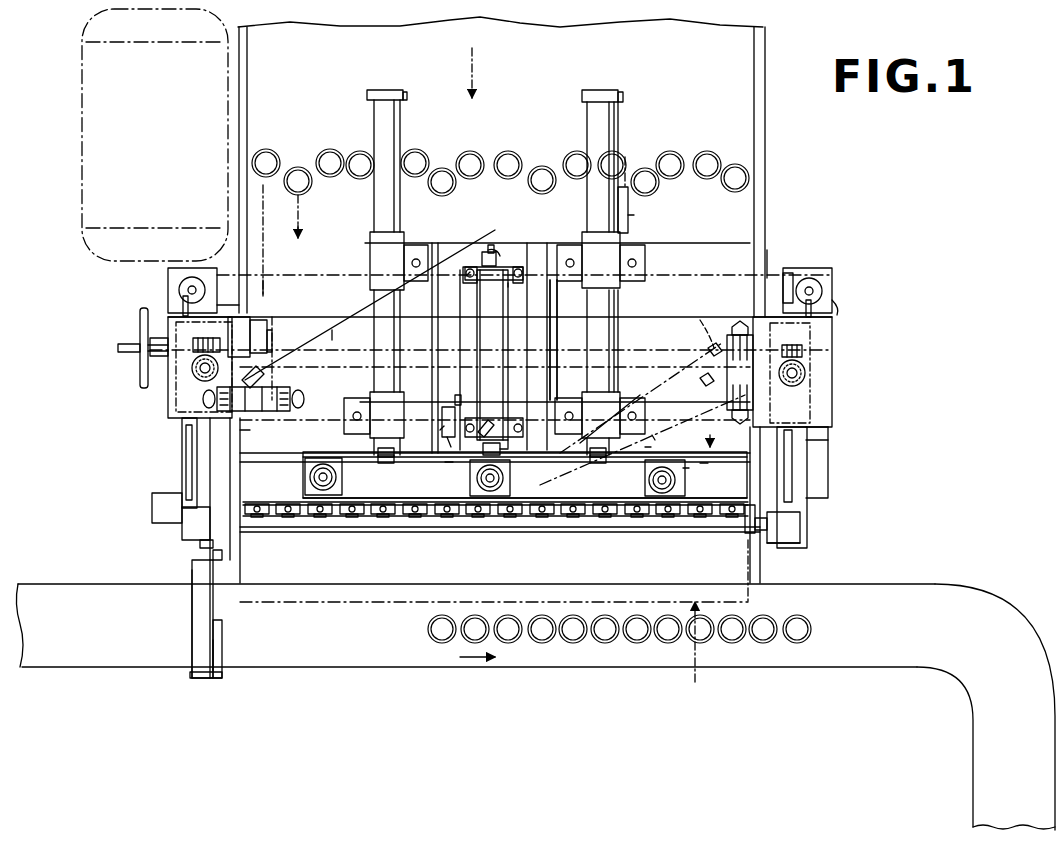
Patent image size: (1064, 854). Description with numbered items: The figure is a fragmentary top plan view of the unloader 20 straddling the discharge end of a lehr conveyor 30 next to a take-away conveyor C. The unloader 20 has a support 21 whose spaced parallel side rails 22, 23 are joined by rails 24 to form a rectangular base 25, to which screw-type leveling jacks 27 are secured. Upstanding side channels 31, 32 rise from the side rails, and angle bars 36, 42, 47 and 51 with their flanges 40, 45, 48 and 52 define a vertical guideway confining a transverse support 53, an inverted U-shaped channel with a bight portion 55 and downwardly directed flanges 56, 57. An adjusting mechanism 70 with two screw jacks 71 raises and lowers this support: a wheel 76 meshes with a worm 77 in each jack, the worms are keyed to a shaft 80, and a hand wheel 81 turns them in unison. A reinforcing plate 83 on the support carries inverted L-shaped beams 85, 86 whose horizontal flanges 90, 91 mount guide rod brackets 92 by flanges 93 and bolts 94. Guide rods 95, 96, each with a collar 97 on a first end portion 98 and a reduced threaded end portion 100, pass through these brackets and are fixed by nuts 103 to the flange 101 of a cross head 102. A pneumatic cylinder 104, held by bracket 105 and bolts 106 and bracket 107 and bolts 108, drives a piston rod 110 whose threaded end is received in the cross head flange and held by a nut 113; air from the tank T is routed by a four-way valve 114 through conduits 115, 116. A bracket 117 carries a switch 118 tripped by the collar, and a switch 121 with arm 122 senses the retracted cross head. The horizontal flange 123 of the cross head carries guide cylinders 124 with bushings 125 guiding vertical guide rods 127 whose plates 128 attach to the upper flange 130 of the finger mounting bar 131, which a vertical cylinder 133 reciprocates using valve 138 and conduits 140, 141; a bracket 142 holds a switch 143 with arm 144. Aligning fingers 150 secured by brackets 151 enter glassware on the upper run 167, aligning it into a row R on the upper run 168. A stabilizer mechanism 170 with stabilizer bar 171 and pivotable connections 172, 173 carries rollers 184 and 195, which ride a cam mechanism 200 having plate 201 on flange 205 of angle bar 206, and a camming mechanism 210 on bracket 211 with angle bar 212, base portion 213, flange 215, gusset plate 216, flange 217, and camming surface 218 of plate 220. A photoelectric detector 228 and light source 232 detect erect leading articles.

The air tank T is at (157, 139).
The unloader 20 is at (385, 534).
The support 21 is at (835, 315).
The side rail 22 is at (168, 472).
The side rail 23 is at (823, 465).
The rail 24 is at (770, 278).
The base 25 is at (150, 492).
The screw-type leveling jack 27 is at (183, 268).
The lehr conveyor 30 is at (502, 66).
The side channel 31 is at (190, 410).
The side channel 32 is at (807, 395).
The angle bar 36 is at (170, 422).
The flange 40 is at (173, 432).
The angle bar 42 is at (843, 408).
The flange 45 is at (827, 432).
The second angle bar 47 is at (200, 280).
The flange 48 is at (165, 302).
The angle bar 51 is at (792, 283).
The flange 52 is at (832, 290).
The transverse support 53 is at (702, 470).
The bight portion 55 is at (312, 314).
The flange 56 is at (278, 430).
The flange 57 is at (272, 300).
The adjusting mechanism 70 is at (125, 352).
The screw jack 71 is at (143, 371).
The wheel 76 is at (190, 374).
The worm 77 is at (145, 320).
The shaft 80 is at (343, 346).
The hand wheel 81 is at (130, 326).
The reinforcing plate 83 is at (514, 342).
The inverted L-shaped beam 85 is at (539, 250).
The inverted L-shaped beam 86 is at (443, 396).
The horizontal flange 90 is at (498, 252).
The horizontal flange 91 is at (553, 402).
The guide rod bracket 92 is at (385, 232).
The flange 93 is at (357, 244).
The bolt 94 is at (347, 262).
The guide rod 95 is at (332, 332).
The guide rod 96 is at (593, 317).
The collar 97 is at (397, 90).
The first end portion 98 is at (390, 123).
The reduced threaded end portion 100 is at (389, 462).
The flange 101 is at (448, 466).
The cross head 102 is at (685, 473).
The nut 103 is at (334, 474).
The pneumatic cylinder 104 is at (510, 288).
The bracket 105 is at (485, 286).
The bolt 106 is at (472, 270).
The bracket 107 is at (501, 412).
The bolt 108 is at (508, 417).
The piston rod 110 is at (515, 481).
The bolt 113 is at (491, 480).
The four-way solenoid operated air valve 114 is at (253, 398).
The flexible conduit 115 is at (494, 242).
The flexible conduit 116 is at (275, 356).
The bracket 117 is at (632, 217).
The switch 118 is at (626, 188).
The switch 121 is at (443, 428).
The switching arm 122 is at (440, 426).
The horizontal flange 123 is at (403, 494).
The vertical guide cylinder 124 is at (304, 470).
The anti-friction bushing 125 is at (278, 500).
The vertical guide rod 127 is at (303, 480).
The plate 128 is at (327, 492).
The upper flange 130 is at (242, 537).
The finger mounting bar 131 is at (247, 502).
The vertical pneumatic cylinder 133 is at (493, 532).
The four-way solenoid operated air valve 138 is at (736, 330).
The flexible conduit 140 is at (708, 384).
The flexible conduit 141 is at (707, 348).
The vertical bracket 142 is at (649, 439).
The switch 143 is at (650, 447).
The switch arm 144 is at (710, 444).
The aligning finger 150 is at (423, 516).
The bracket 151 is at (353, 520).
The upper run 167 is at (545, 578).
The upper run 168 is at (294, 641).
The stabilizer mechanism 170 is at (572, 535).
The stabilizer bar 171 is at (465, 586).
The pivotable connection 172 is at (740, 540).
The pivotable connection 173 is at (229, 504).
The roller 184 is at (763, 537).
The roller 195 is at (212, 560).
The cam mechanism 200 is at (793, 525).
The inverted L-shaped plate 201 is at (803, 542).
The horizontal flange 205 is at (827, 439).
The angle bar 206 is at (795, 475).
The camming mechanism 210 is at (187, 602).
The bracket 211 is at (210, 467).
The angle bar 212 is at (192, 633).
The base portion 213 is at (197, 548).
The vertical flange 215 is at (196, 523).
The gusset plate 216 is at (480, 575).
The vertical flange 217 is at (198, 679).
The camming surface 218 is at (216, 691).
The plate 220 is at (220, 652).
The photoelectric light detector 228 is at (155, 517).
The light source 232 is at (836, 502).
The take-away conveyor C is at (340, 662).
The row R is at (822, 639).